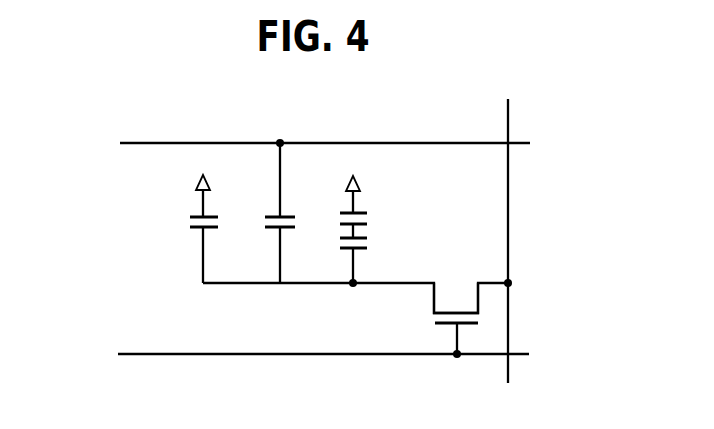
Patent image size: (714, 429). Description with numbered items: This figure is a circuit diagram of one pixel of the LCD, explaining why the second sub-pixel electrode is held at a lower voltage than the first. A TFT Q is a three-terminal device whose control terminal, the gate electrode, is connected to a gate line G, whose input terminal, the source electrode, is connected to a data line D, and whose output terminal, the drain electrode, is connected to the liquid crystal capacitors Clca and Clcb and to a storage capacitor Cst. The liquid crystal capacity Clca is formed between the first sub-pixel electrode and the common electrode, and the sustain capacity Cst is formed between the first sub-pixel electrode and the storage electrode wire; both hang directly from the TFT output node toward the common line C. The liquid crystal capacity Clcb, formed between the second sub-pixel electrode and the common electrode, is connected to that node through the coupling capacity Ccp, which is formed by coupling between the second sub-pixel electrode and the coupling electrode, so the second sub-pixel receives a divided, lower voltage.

The common voltage line C is at (314, 147).
The gate line G is at (313, 356).
The data line D is at (508, 229).
The liquid crystal capacity Clca is at (181, 229).
The sustain capacity Cst is at (297, 213).
The liquid crystal capacity Clcb is at (372, 207).
The coupling capacity Ccp is at (370, 260).
The TFT Q is at (442, 318).